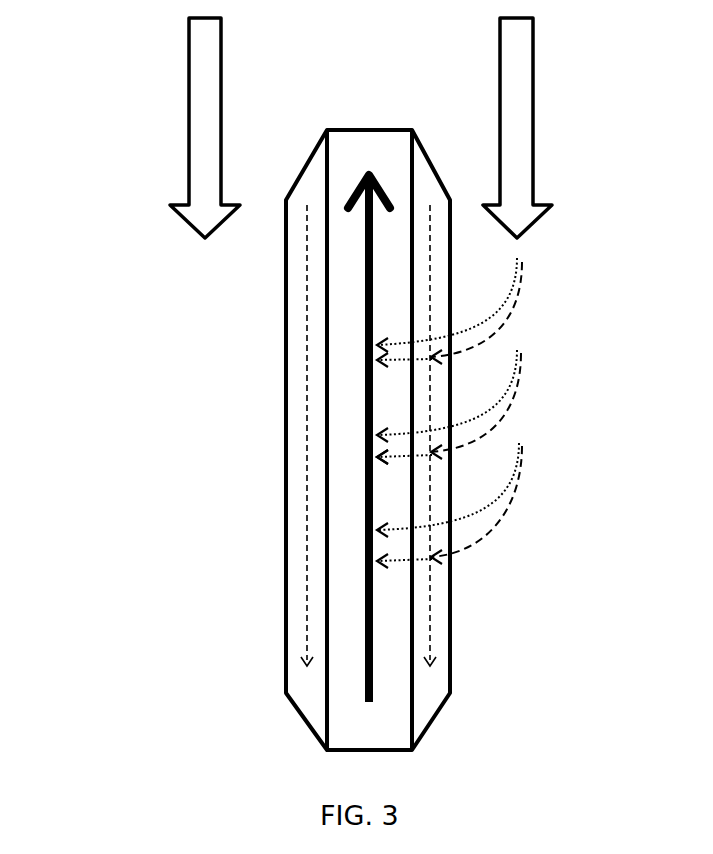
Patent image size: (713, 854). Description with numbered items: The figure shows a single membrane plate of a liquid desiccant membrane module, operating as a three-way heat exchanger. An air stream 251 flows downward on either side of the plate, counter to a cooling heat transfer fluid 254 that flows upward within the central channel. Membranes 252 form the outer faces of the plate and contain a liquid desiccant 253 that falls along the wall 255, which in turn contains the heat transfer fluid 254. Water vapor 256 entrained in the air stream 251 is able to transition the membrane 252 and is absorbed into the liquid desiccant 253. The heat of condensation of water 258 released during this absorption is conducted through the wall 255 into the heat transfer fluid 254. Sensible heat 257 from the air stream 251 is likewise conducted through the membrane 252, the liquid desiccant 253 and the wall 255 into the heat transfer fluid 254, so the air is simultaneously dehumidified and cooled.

The air stream 251 is at (175, 128).
The membranes 252 is at (285, 322).
The liquid desiccant 253 is at (307, 440).
The heat transfer fluid 254 is at (365, 570).
The wall 255 is at (410, 676).
The water vapor 256 is at (488, 433).
The sensible heat 257 is at (477, 413).
The heat of condensation of water 258 is at (392, 458).